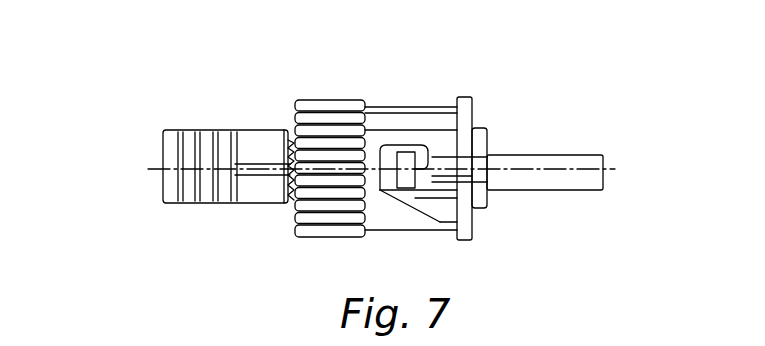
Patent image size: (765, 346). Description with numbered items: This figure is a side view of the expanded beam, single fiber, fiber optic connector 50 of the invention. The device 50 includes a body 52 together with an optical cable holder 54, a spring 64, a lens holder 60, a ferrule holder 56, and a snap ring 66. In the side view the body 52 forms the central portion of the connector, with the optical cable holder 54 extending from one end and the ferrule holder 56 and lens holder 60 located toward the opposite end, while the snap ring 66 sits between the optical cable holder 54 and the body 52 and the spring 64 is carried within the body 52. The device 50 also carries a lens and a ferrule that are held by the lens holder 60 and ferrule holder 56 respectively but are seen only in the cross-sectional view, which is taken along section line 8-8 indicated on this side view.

The expanded beam, single fiber, fiber optic connector 50 is at (607, 88).
The body 52 is at (365, 102).
The optical cable holder 54 is at (233, 130).
The ferrule holder 56 is at (486, 128).
The lens holder 60 is at (517, 190).
The spring 64 is at (438, 205).
The snap ring 66 is at (289, 205).
The section line 8- 8 is at (130, 167).